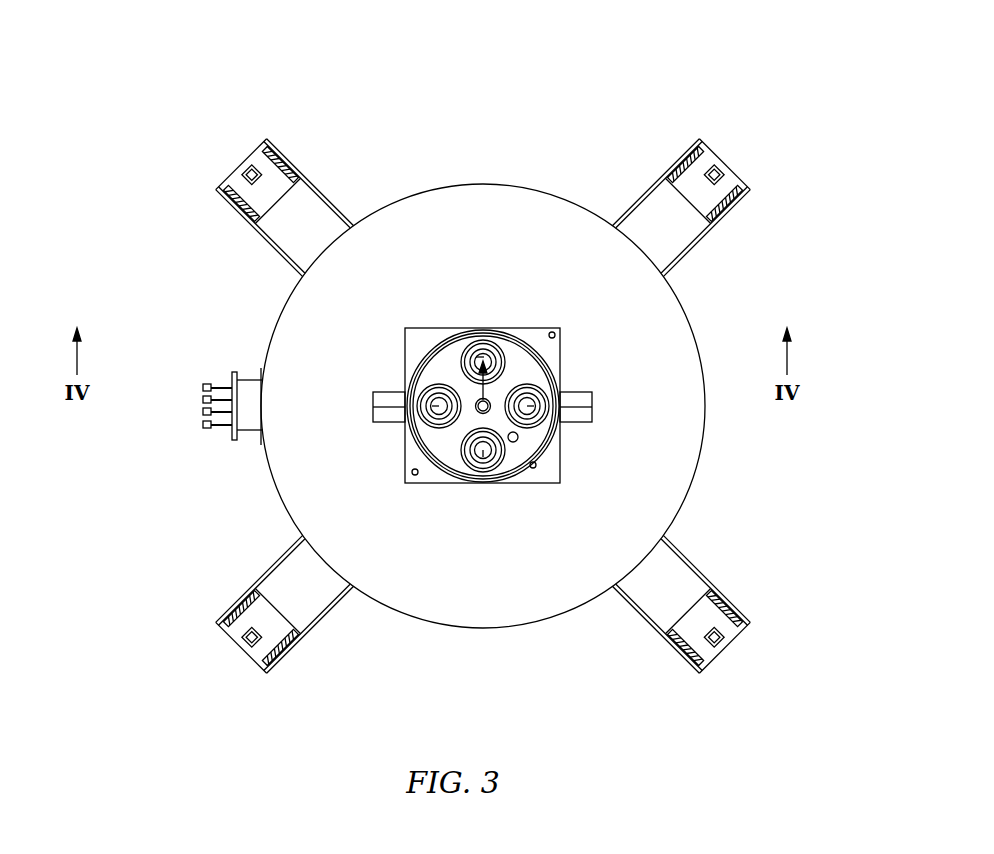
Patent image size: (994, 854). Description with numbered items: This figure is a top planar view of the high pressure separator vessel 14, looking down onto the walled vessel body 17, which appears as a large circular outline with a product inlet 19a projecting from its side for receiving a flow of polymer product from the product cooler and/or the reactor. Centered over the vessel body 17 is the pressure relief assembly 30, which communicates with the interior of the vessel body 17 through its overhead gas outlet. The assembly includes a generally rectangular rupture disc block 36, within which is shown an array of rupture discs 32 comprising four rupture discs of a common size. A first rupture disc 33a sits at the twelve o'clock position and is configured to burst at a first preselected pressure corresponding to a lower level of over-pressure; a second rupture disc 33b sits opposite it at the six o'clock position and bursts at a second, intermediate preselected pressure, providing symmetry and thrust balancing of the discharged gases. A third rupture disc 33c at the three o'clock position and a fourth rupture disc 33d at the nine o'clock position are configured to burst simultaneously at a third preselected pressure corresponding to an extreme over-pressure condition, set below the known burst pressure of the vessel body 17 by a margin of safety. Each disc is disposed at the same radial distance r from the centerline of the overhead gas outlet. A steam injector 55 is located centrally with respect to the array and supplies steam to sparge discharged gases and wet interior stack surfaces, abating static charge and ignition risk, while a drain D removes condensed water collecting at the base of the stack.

The high pressure separator vessel 14 is at (527, 38).
The walled vessel body 17 is at (470, 184).
The product inlet 19a is at (200, 398).
The pressure relief assembly 30 is at (578, 451).
The array of rupture discs 32 is at (503, 294).
The first rupture disc 33a is at (495, 352).
The second rupture disc 33b is at (487, 452).
The third rupture disc 33c is at (530, 402).
The fourth rupture disc 33d is at (432, 410).
The rupture disc block 36 is at (448, 484).
The steam injector 55 is at (478, 402).
The radial distance r is at (490, 383).
The drain D is at (518, 440).